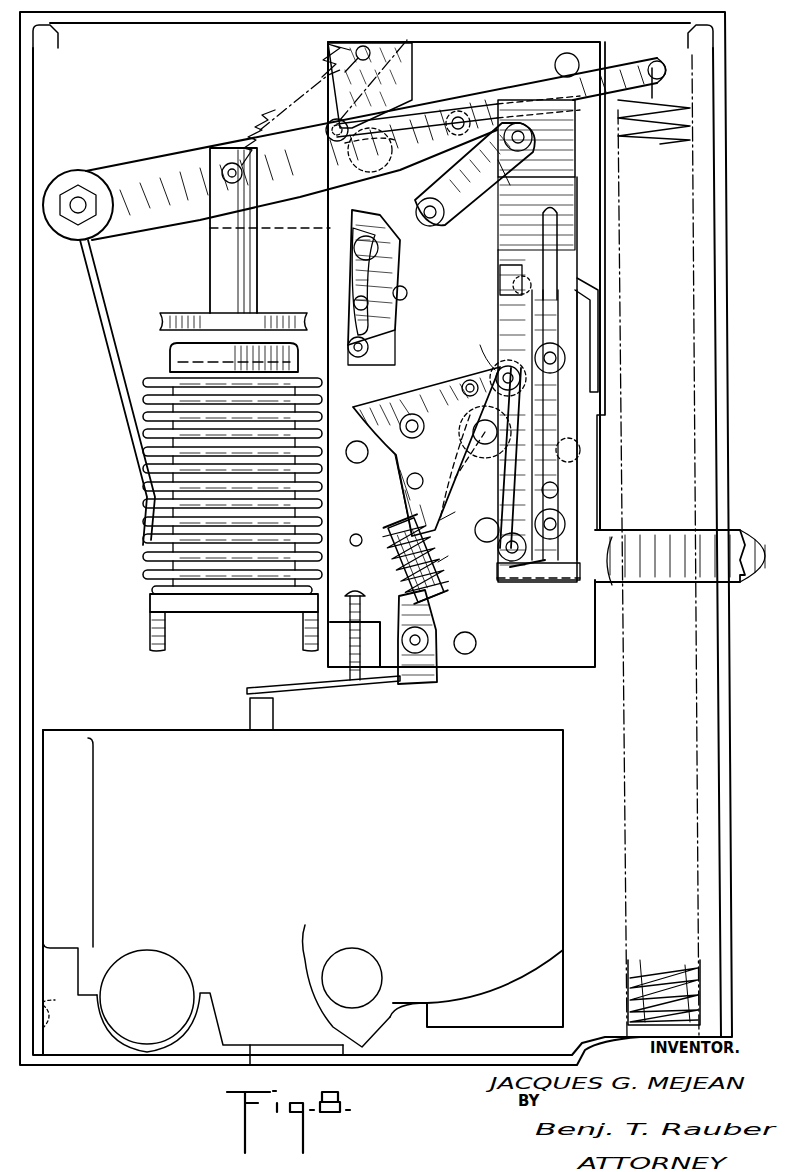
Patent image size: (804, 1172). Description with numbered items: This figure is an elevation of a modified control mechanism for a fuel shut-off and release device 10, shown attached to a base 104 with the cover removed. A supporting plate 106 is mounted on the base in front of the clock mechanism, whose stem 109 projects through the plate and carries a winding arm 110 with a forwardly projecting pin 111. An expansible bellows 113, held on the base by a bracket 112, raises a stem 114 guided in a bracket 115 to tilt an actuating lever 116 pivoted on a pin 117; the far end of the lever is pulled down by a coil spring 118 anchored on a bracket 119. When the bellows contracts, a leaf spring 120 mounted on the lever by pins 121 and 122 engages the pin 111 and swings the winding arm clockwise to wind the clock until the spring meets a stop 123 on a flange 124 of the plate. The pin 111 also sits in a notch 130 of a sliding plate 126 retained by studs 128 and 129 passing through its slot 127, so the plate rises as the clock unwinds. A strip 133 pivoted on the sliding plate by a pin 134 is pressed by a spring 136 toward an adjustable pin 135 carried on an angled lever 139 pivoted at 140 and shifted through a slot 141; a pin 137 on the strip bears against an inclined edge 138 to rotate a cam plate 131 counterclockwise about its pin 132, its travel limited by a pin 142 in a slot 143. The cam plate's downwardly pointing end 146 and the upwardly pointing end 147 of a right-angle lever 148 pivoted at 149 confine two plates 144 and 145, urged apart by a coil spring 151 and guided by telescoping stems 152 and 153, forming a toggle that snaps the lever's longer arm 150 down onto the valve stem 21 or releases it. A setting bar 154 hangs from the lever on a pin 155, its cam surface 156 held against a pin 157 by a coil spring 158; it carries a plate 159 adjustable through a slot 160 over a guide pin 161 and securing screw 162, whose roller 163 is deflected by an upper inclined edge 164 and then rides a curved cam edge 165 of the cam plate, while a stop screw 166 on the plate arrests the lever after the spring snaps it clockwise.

The fuel shut-off and release device 10 is at (220, 795).
The valve stem 21 is at (250, 715).
The base 104 is at (726, 818).
The supporting plate 106 is at (597, 410).
The stem 109 is at (433, 222).
The winding arm 110 is at (498, 200).
The pin 111 is at (520, 170).
The bracket 112 is at (258, 607).
The expansible bellows 113 is at (148, 498).
The stem 114 is at (246, 290).
The bracket 115 is at (205, 318).
The actuating lever 116 is at (135, 145).
The pin 117 is at (70, 180).
The coil spring 118 is at (690, 125).
The bracket 119 is at (625, 1025).
The leaf spring 120 is at (505, 98).
The pin 121 is at (352, 112).
The pin 122 is at (455, 110).
The stop 123 is at (598, 298).
The flange 124 is at (612, 248).
The sliding plate 126 is at (515, 250).
The slot 127 is at (558, 490).
The retaining stud 128 is at (565, 522).
The retaining stud 129 is at (565, 360).
The notch 130 is at (545, 152).
The cam plate 131 is at (385, 392).
The pin 132 is at (433, 412).
The strip 133 is at (498, 302).
The pin 134 is at (515, 580).
The adjustable pin 135 is at (478, 465).
The spring 136 is at (580, 450).
The pin 137 is at (480, 345).
The inclined edge 138 is at (500, 372).
The angled lever 139 is at (615, 590).
The pivot 140 is at (498, 565).
The slot 141 is at (470, 450).
The pin 142 is at (407, 480).
The slot 143 is at (408, 500).
The plate 144 is at (455, 512).
The plate 145 is at (459, 634).
The downwardly pointing end 146 is at (400, 528).
The upwardly pointing end 147 is at (395, 600).
The right-angle lever 148 is at (420, 684).
The pivot 149 is at (418, 645).
The longer arm 150 is at (258, 688).
The coil spring 151 is at (448, 570).
The telescoping guide stem 152 is at (487, 542).
The telescoping guide stem 153 is at (385, 555).
The bar 154 is at (350, 215).
The pin 155 is at (338, 182).
The cam surface 156 is at (395, 252).
The pin 157 is at (408, 290).
The coil spring 158 is at (250, 135).
The plate 159 is at (445, 190).
The slot 160 is at (383, 322).
The guide pin 161 is at (368, 303).
The securing screw 162 is at (355, 240).
The roller 163 is at (353, 362).
The upper inclined edge 164 is at (440, 395).
The curved cam edge 165 is at (355, 441).
The stop screw 166 is at (370, 690).